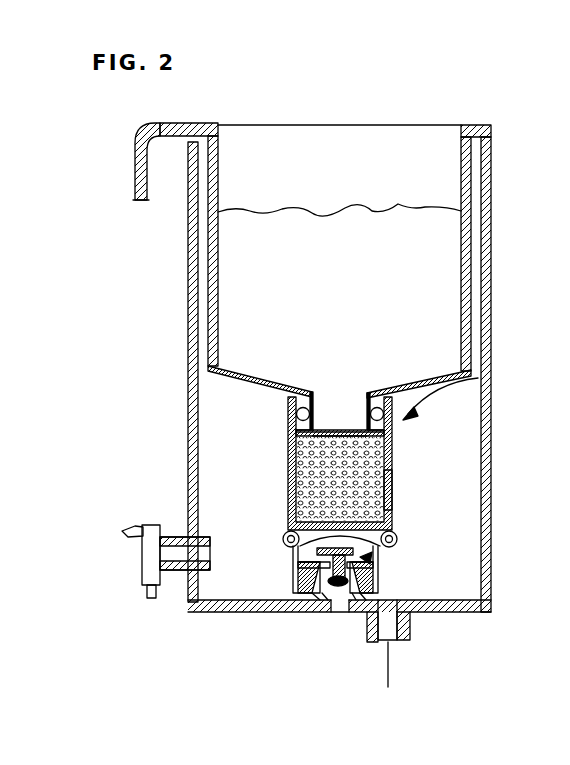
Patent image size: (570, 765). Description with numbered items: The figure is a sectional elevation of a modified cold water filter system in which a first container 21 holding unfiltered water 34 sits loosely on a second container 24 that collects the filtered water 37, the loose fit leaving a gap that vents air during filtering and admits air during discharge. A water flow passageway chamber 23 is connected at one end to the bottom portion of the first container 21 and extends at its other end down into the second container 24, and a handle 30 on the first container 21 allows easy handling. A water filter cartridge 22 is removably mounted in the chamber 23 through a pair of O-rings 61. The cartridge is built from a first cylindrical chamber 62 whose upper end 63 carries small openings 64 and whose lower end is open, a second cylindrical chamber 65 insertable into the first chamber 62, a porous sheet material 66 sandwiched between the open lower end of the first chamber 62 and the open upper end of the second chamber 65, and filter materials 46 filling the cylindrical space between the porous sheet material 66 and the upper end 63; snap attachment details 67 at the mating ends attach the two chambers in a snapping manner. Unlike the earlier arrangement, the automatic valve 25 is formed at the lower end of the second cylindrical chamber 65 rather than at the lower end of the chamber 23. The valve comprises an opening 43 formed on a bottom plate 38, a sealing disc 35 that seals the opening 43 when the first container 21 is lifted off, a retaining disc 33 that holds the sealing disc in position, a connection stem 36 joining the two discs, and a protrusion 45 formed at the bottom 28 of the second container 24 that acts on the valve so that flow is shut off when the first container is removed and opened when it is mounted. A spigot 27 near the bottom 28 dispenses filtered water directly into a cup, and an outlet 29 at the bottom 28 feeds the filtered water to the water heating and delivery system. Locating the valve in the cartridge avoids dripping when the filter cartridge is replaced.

The first container 21 is at (218, 173).
The water filter cartridge 22 is at (478, 378).
The water flow passageway chamber 23 is at (313, 394).
The second container 24 is at (492, 284).
The automatic valve 25 is at (372, 562).
The spigot 27 is at (138, 542).
The bottom 28 is at (470, 617).
The outlet 29 is at (400, 648).
The handle 30 is at (141, 204).
The retaining disc 33 is at (335, 590).
The unfiltered water 34 is at (348, 262).
The sealing disc 35 is at (298, 554).
The connection stem 36 is at (327, 563).
The filtered water 37 is at (448, 432).
The bottom plate 38 is at (325, 592).
The opening 43 is at (346, 592).
The protrusion 45 is at (340, 588).
The filter materials 46 is at (300, 488).
The O-ring 61 is at (289, 412).
The first cylindrical chamber 62 is at (288, 457).
The upper end 63 is at (352, 432).
The small openings 64 is at (341, 432).
The second cylindrical chamber 65 is at (379, 557).
The porous sheet material 66 is at (392, 490).
The snap attachment details 67 is at (284, 536).